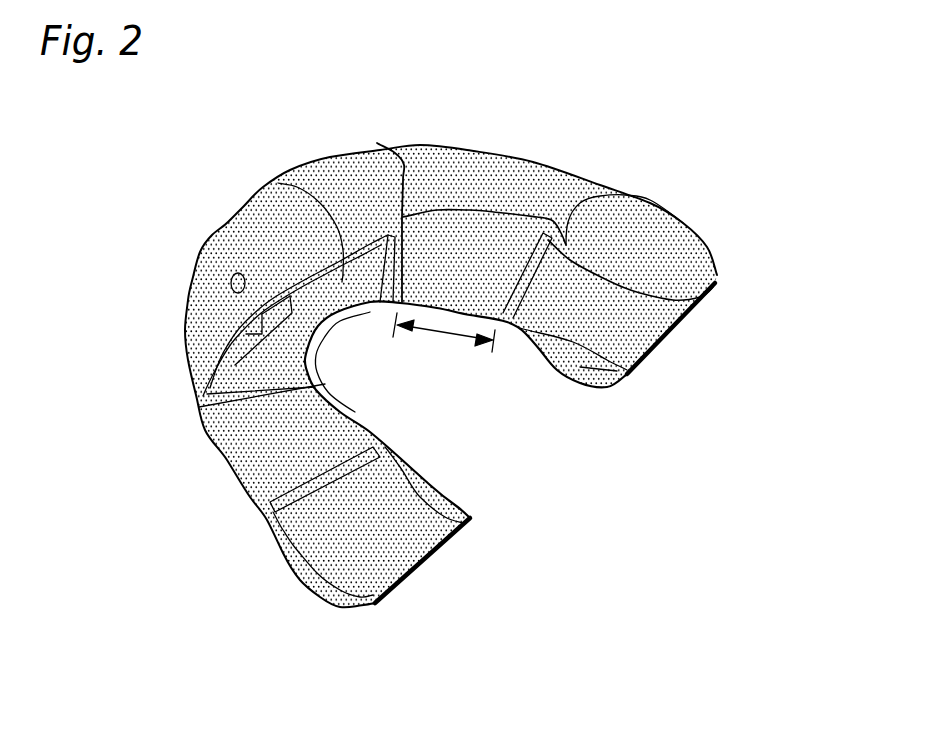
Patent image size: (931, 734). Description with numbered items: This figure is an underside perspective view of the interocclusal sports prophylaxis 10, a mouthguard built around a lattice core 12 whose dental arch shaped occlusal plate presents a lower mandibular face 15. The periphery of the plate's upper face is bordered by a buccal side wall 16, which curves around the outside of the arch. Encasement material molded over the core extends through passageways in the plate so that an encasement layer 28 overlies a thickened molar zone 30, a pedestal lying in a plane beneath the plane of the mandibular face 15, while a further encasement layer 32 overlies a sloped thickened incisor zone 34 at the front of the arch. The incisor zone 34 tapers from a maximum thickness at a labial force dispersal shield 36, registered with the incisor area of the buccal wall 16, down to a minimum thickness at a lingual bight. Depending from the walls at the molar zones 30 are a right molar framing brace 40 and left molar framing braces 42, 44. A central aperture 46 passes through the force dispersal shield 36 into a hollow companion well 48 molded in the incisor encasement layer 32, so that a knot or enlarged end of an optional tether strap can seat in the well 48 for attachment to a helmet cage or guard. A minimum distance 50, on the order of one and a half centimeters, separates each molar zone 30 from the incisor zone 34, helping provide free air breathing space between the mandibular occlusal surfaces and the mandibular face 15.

The interocclusal sports prophylaxis 10 is at (652, 507).
The lattice core 12 is at (200, 332).
The mandibular face 15 is at (575, 263).
The buccal side wall 16 is at (472, 162).
The encasement layer 28 is at (640, 333).
The thickened molar zone 30 is at (632, 193).
The encasement layer 32 is at (290, 185).
The sloped thickened incisor zone 34 is at (377, 143).
The labial force dispersal shield 36 is at (283, 230).
The right molar framing brace 40 is at (470, 493).
The left molar framing brace 42 is at (655, 267).
The left molar framing brace 44 is at (630, 377).
The central aperture 46 is at (230, 273).
The hollow companion well 48 is at (200, 400).
The minimum distance 50 is at (450, 340).